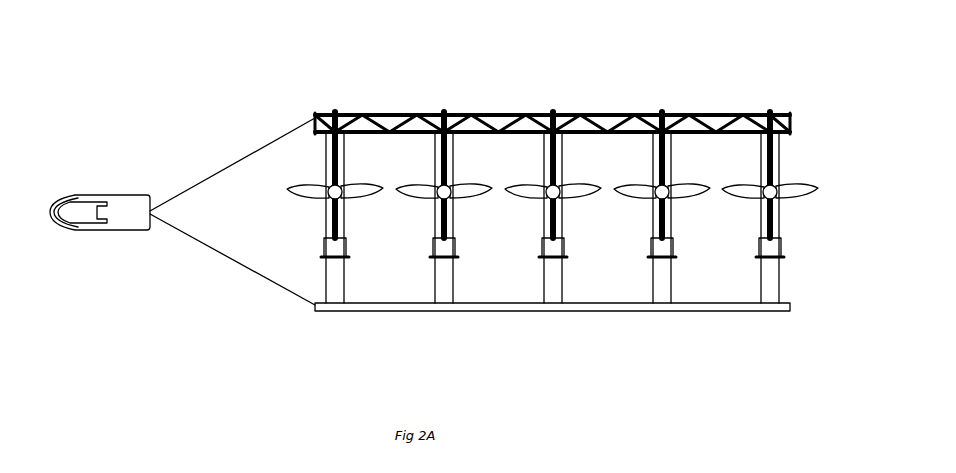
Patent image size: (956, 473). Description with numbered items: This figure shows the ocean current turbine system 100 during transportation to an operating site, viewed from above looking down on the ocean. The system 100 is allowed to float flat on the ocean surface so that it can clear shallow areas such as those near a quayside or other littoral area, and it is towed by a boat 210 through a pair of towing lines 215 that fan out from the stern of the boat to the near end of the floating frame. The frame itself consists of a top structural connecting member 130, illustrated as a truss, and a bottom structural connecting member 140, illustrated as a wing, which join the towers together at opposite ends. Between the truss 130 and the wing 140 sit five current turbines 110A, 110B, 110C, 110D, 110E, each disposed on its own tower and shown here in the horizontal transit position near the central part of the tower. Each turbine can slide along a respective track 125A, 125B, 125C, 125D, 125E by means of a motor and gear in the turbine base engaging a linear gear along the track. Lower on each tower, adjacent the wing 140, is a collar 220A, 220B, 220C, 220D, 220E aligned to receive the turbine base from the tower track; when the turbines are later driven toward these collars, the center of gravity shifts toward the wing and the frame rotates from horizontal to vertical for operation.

The ocean current turbine system 100 is at (553, 113).
The current turbine 110A is at (301, 187).
The current turbine 110B is at (410, 187).
The current turbine 110C is at (519, 187).
The current turbine 110D is at (628, 187).
The current turbine 110E is at (736, 187).
The track 125A is at (344, 210).
The track 125B is at (453, 210).
The track 125C is at (562, 210).
The track 125D is at (671, 210).
The track 125E is at (779, 210).
The top structural connecting member 130 is at (624, 114).
The bottom structural connecting member 140 is at (745, 312).
The boat 210 is at (81, 196).
The towing lines 215 is at (252, 156).
The collar 220A is at (347, 246).
The collar 220B is at (456, 246).
The collar 220C is at (565, 246).
The collar 220D is at (674, 246).
The collar 220E is at (782, 246).